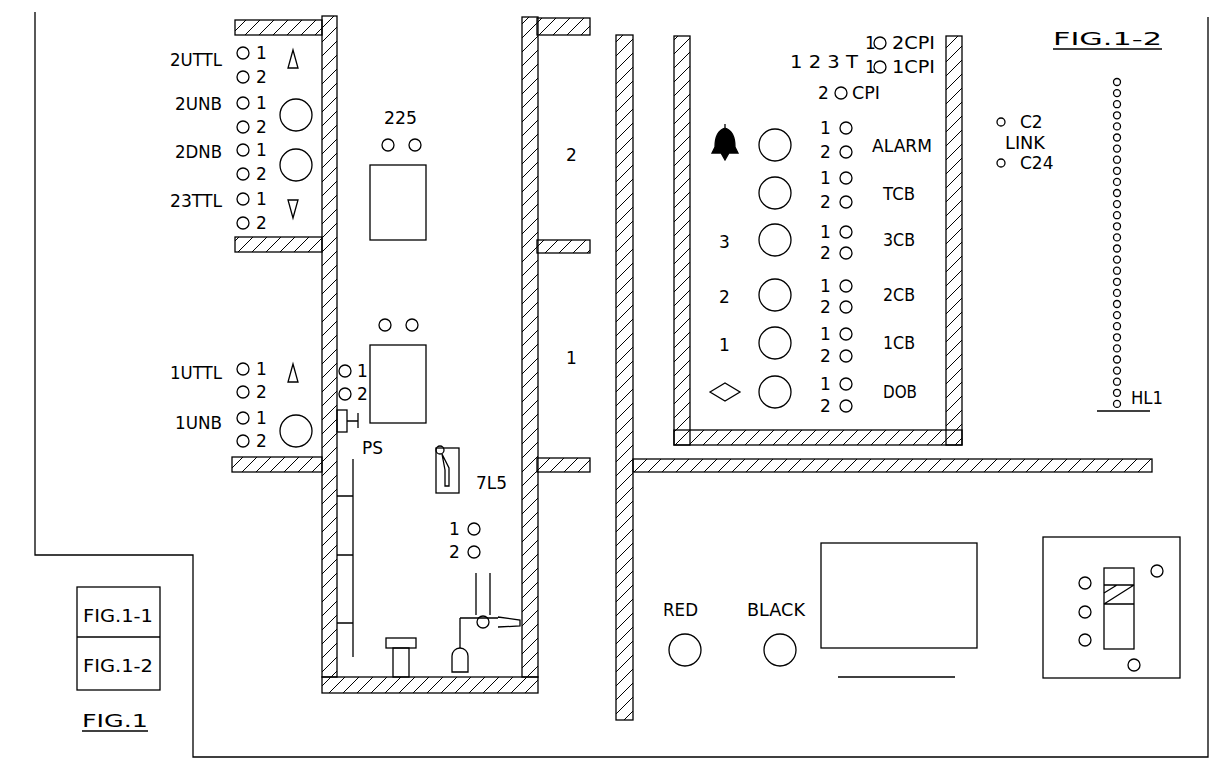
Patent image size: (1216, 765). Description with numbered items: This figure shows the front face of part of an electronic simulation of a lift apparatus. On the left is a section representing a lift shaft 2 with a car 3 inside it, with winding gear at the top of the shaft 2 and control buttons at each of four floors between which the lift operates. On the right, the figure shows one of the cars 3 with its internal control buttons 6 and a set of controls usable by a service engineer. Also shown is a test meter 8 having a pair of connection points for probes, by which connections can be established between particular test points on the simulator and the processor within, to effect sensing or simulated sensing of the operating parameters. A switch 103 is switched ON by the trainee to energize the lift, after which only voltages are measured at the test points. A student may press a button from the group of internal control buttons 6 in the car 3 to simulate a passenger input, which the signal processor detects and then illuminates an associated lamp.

The lift shaft 2 is at (322, 609).
The car 3 is at (430, 381).
The internal control buttons 6 is at (771, 206).
The test meter 8 is at (968, 676).
The switch 103 is at (1147, 679).